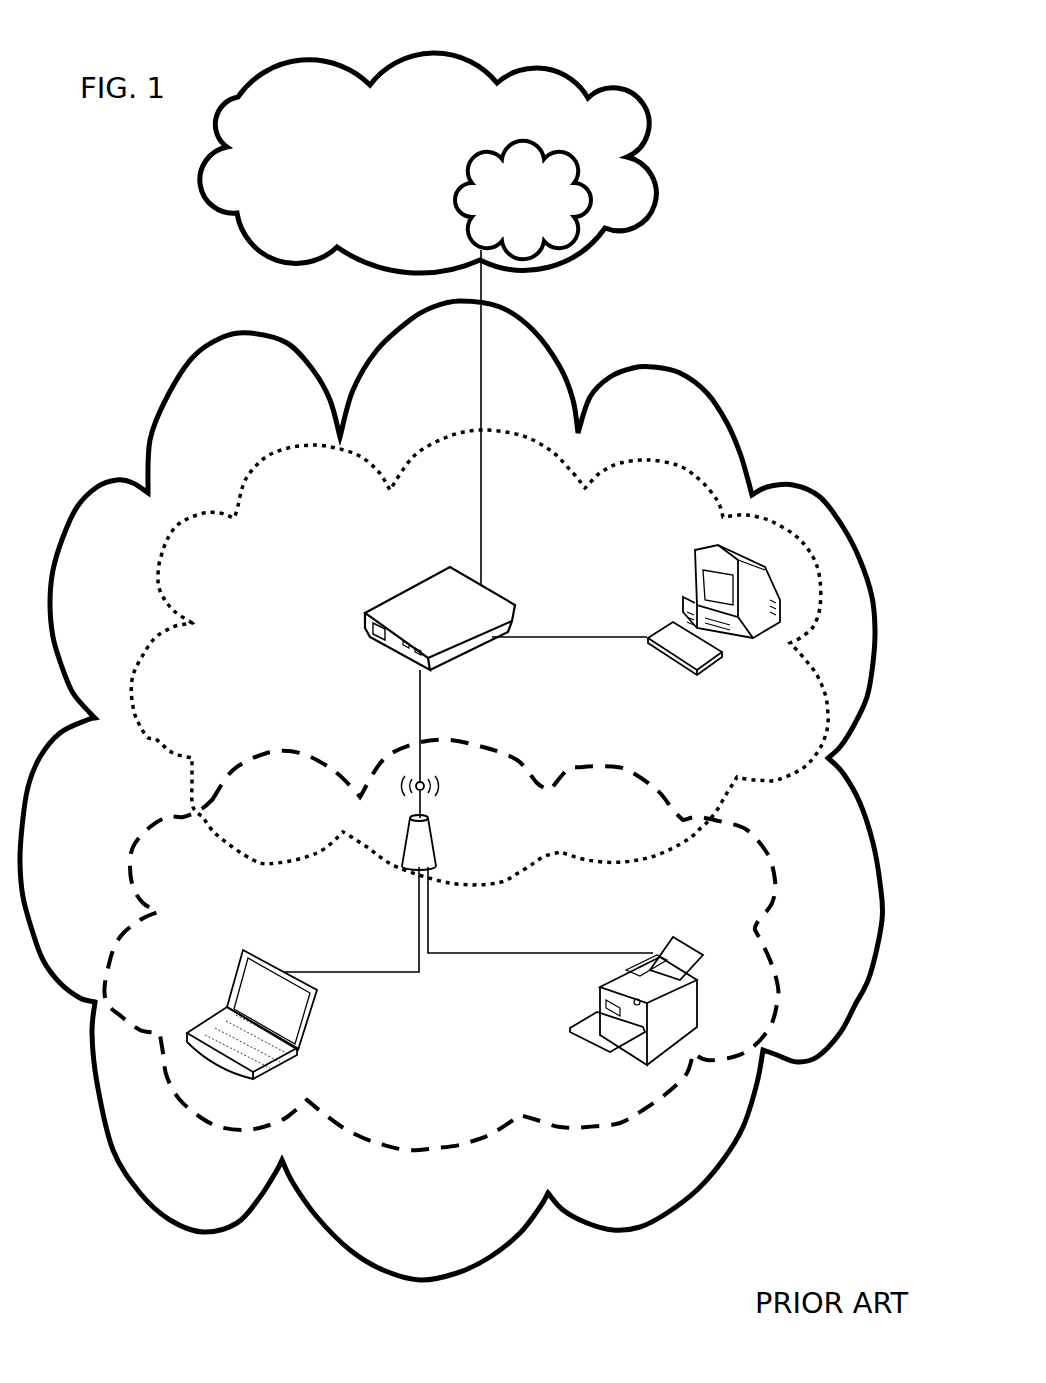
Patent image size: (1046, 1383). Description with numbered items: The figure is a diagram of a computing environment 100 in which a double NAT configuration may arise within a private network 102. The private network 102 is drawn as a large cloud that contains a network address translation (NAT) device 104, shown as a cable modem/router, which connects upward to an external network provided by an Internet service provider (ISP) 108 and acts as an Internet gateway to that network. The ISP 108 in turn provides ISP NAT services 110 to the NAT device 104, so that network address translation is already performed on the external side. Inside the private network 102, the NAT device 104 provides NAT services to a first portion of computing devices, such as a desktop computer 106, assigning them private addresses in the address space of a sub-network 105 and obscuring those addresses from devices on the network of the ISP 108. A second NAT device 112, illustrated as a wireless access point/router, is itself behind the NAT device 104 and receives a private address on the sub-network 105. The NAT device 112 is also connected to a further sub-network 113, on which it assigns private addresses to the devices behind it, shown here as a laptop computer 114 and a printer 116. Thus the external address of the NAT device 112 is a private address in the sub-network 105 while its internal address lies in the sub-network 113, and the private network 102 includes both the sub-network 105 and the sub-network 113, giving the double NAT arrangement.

The computing environment 100 is at (752, 112).
The private network 102 is at (704, 368).
The network address translation (NAT) device 104 is at (433, 569).
The sub-network 105 is at (252, 468).
The desktop computer 106 is at (694, 575).
The Internet service provider (ISP) 108 is at (481, 63).
The ISP NAT services 110 is at (551, 152).
The NAT device 112 is at (405, 837).
The sub-network 113 is at (666, 1105).
The laptop computer 114 is at (230, 997).
The printer 116 is at (653, 960).